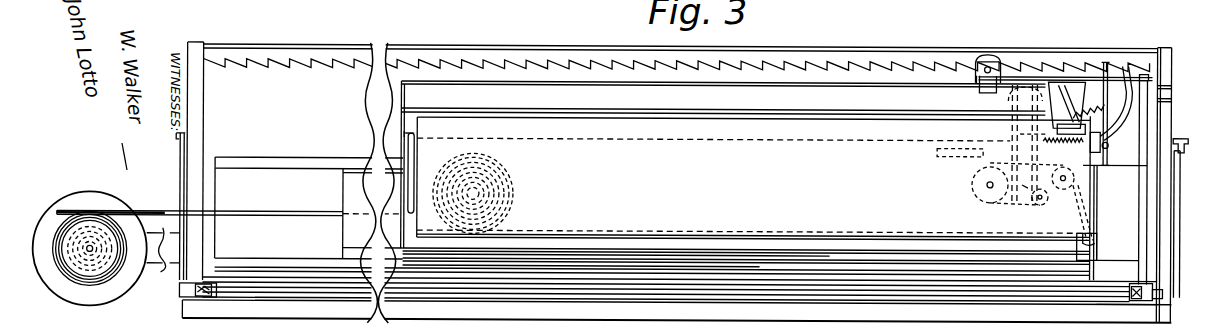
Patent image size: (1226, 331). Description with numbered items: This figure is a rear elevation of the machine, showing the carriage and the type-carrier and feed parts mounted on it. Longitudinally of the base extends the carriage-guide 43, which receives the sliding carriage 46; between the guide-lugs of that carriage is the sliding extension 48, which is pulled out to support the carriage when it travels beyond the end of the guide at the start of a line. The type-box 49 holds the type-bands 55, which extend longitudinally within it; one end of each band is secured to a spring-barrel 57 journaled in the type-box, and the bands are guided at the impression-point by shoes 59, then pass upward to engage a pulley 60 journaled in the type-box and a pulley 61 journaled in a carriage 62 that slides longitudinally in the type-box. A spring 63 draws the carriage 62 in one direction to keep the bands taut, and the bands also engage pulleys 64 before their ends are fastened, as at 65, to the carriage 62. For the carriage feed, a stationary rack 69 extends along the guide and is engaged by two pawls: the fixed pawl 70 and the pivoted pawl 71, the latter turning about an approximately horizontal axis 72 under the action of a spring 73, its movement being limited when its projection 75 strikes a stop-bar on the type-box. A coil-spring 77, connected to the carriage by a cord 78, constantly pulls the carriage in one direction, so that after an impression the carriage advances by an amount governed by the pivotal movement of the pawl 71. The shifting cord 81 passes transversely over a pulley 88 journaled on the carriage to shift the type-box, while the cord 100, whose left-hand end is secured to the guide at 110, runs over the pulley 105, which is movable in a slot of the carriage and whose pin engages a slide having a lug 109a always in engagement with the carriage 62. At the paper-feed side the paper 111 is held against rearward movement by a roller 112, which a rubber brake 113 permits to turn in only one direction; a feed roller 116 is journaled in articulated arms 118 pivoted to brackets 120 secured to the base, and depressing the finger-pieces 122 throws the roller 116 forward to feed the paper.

The carriage-guide 43 is at (309, 209).
The carriage 46 is at (723, 166).
The sliding extension 48 is at (348, 232).
The type-box 49 is at (756, 196).
The type-bands 55 is at (518, 229).
The spring-barrel 57 is at (475, 194).
The shoes 59 is at (1098, 241).
The pulley 60 is at (1068, 183).
The pulley 61 is at (973, 188).
The carriage 62 is at (975, 158).
The spring 63 is at (1040, 141).
The pulleys 64 is at (1042, 208).
The fastening point 65 is at (1022, 181).
The stationary rack 69 is at (913, 52).
The fixed pawl 70 is at (1116, 103).
The pivoted pawl 71 is at (1108, 62).
The pivot axis 72 is at (1108, 141).
The spring 73 is at (1064, 131).
The projection 75 is at (1076, 105).
The coil-spring 77 is at (57, 233).
The cord 78 is at (258, 213).
The cord 81 is at (974, 70).
The pulley 88 is at (998, 52).
The cord 100 is at (1073, 73).
The pulley 105 is at (1008, 144).
The lug 109a is at (1027, 130).
The attaching point 110 is at (1150, 72).
The paper 111 is at (868, 301).
The roller 112 is at (944, 293).
The rubber brake 113 is at (1126, 312).
The roller 116 is at (180, 289).
The articulated arms 118 is at (181, 175).
The brackets 120 is at (196, 107).
The finger-pieces 122 is at (1196, 153).